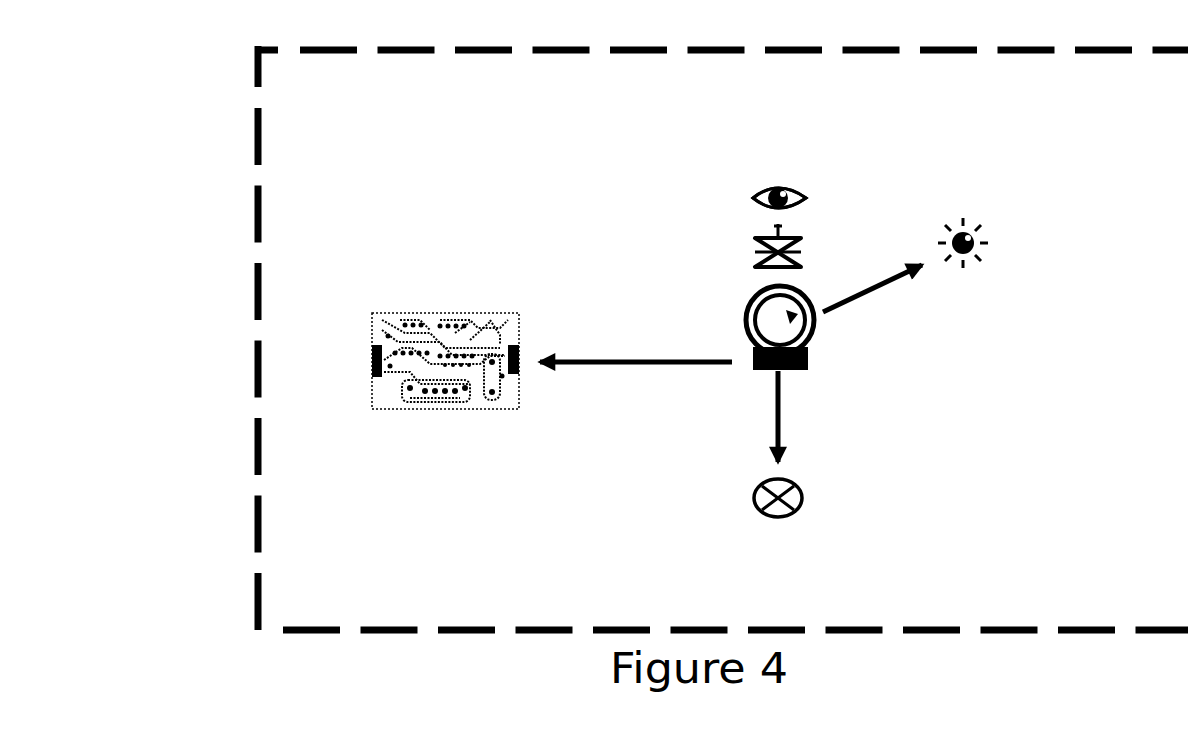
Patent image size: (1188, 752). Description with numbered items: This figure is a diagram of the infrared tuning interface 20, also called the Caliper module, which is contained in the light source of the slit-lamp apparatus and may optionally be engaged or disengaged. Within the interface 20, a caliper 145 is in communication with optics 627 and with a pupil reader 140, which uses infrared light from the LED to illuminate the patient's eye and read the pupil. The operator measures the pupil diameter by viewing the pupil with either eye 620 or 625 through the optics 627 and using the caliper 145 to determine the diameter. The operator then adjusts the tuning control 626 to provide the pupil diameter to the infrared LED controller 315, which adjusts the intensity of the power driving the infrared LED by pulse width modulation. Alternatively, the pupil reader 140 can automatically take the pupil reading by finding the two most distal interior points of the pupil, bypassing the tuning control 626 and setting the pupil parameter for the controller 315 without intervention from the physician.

The infrared tuning interface 20 is at (243, 485).
The pupil reader 140 is at (832, 355).
The caliper 145 is at (815, 520).
The infrared LED controller 315 is at (452, 429).
The eye 620 is at (733, 201).
The eye 625 is at (654, 188).
The tuning control 626 is at (1003, 231).
The optics 627 is at (815, 238).